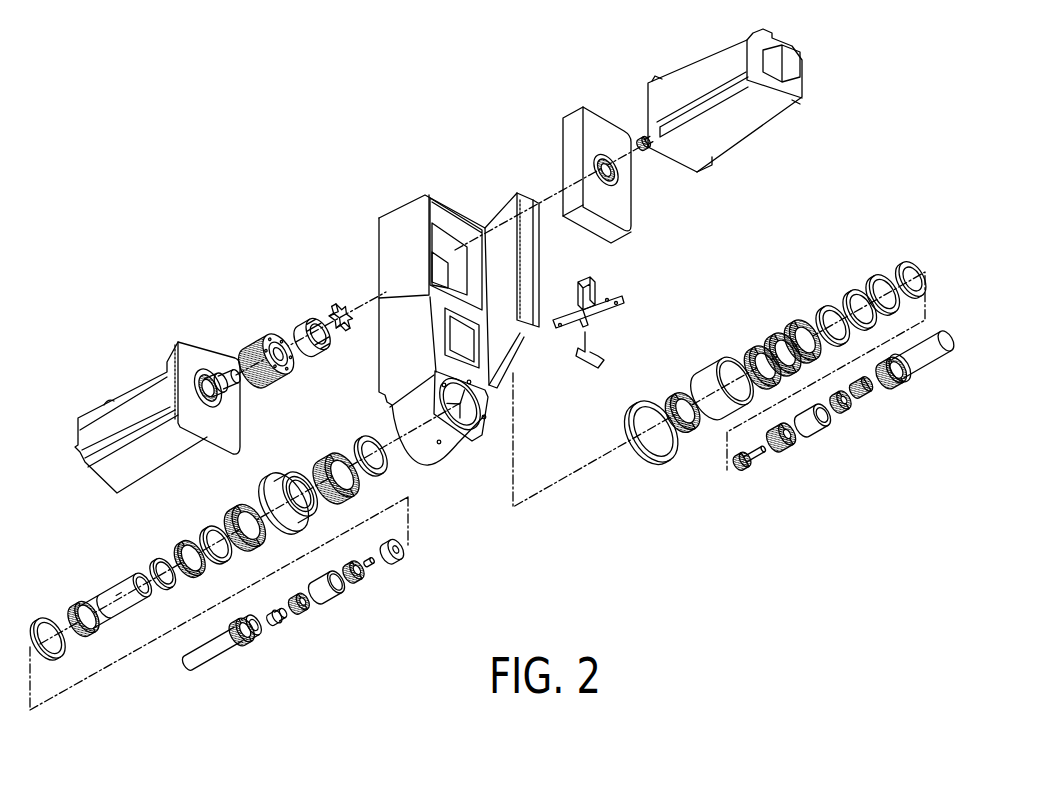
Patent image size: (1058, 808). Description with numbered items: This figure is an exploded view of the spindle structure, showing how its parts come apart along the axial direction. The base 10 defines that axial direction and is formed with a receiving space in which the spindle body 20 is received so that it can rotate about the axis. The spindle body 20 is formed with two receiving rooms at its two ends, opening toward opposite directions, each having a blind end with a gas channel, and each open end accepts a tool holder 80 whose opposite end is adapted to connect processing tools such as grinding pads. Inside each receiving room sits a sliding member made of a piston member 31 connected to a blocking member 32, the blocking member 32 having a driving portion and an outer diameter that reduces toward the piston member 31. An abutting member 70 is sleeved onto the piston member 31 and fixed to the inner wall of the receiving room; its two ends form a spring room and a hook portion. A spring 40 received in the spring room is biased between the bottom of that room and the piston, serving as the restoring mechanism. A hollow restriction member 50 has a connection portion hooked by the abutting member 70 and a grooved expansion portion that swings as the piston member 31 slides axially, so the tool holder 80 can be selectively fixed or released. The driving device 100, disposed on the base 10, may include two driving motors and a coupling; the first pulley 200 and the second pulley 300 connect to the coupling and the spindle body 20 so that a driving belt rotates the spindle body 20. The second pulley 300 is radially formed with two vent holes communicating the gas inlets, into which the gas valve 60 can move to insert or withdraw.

The base 10 is at (430, 447).
The spindle body 20 is at (120, 585).
The piston member 31 is at (384, 561).
The blocking member 32 is at (279, 624).
The spring 40 is at (356, 581).
The restriction member 50 is at (303, 611).
The gas valve 60 is at (588, 338).
The abutting member 70 is at (328, 598).
The tool holder 80 is at (212, 657).
The driving device 100 is at (137, 402).
The first pulley 200 is at (258, 346).
The second pulley 300 is at (324, 456).